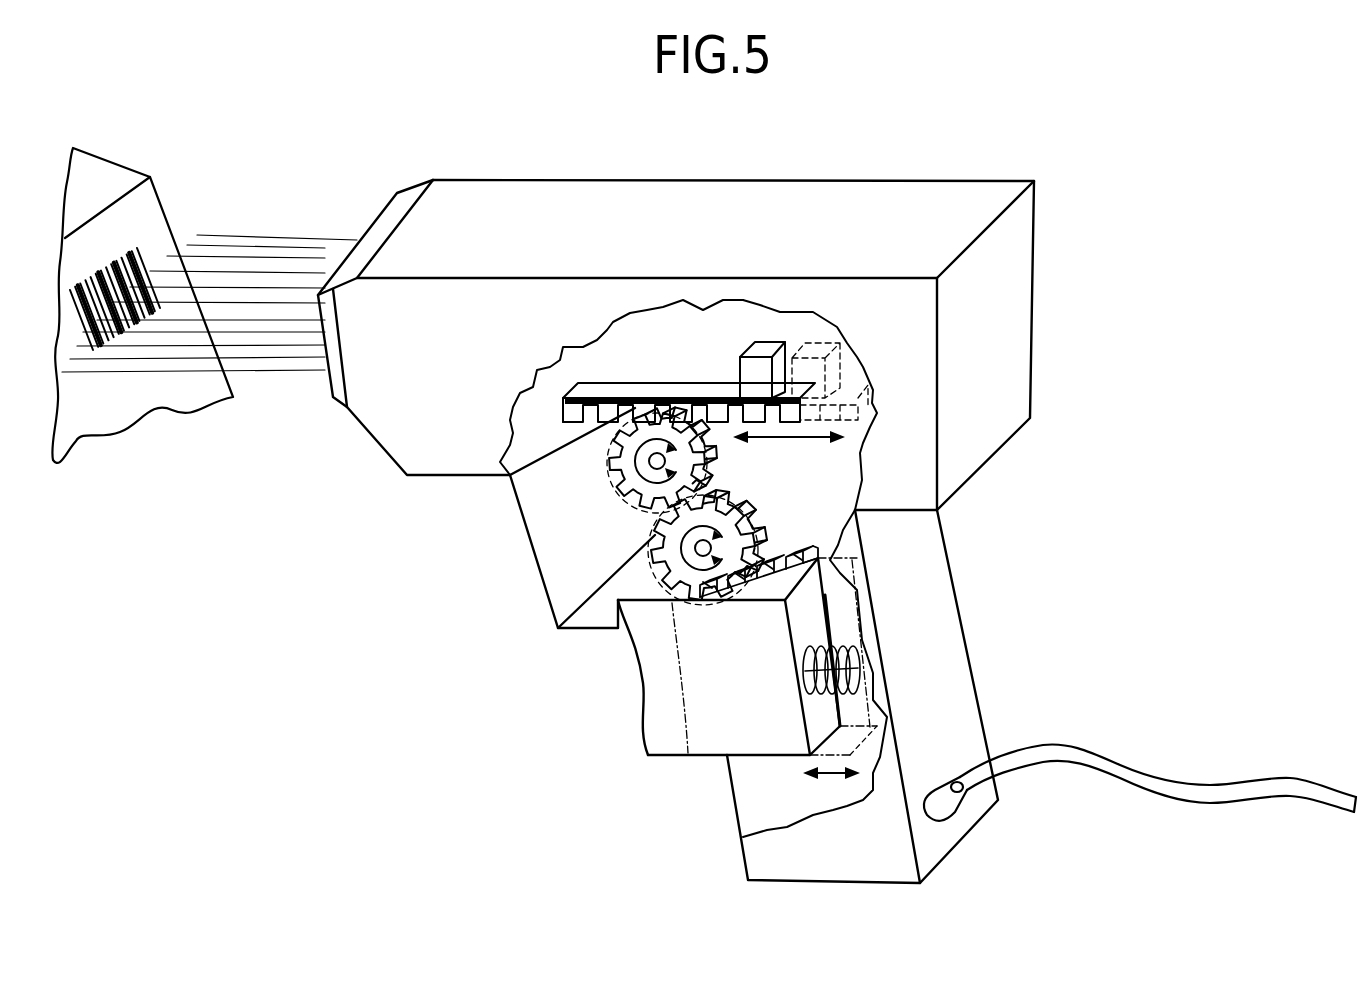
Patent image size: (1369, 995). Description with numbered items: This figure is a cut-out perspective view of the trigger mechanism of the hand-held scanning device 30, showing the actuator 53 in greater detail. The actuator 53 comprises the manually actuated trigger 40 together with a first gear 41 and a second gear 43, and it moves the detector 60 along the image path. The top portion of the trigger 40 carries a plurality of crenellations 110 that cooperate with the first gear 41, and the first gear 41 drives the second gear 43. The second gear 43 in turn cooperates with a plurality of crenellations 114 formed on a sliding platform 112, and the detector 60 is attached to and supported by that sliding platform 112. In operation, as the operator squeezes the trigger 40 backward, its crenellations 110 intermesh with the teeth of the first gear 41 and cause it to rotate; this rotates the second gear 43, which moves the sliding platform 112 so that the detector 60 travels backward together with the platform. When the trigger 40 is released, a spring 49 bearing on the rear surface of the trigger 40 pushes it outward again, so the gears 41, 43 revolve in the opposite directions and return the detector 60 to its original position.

The hand-held scanning device 30 is at (1042, 163).
The actuator 53 is at (541, 645).
The sliding platform 112 is at (705, 353).
The crenellations 114 is at (592, 410).
The detector 60 is at (770, 343).
The second gear 43 is at (605, 478).
The first gear 41 is at (648, 538).
The crenellations 110 is at (782, 598).
The spring 49 is at (840, 645).
The trigger 40 is at (729, 678).